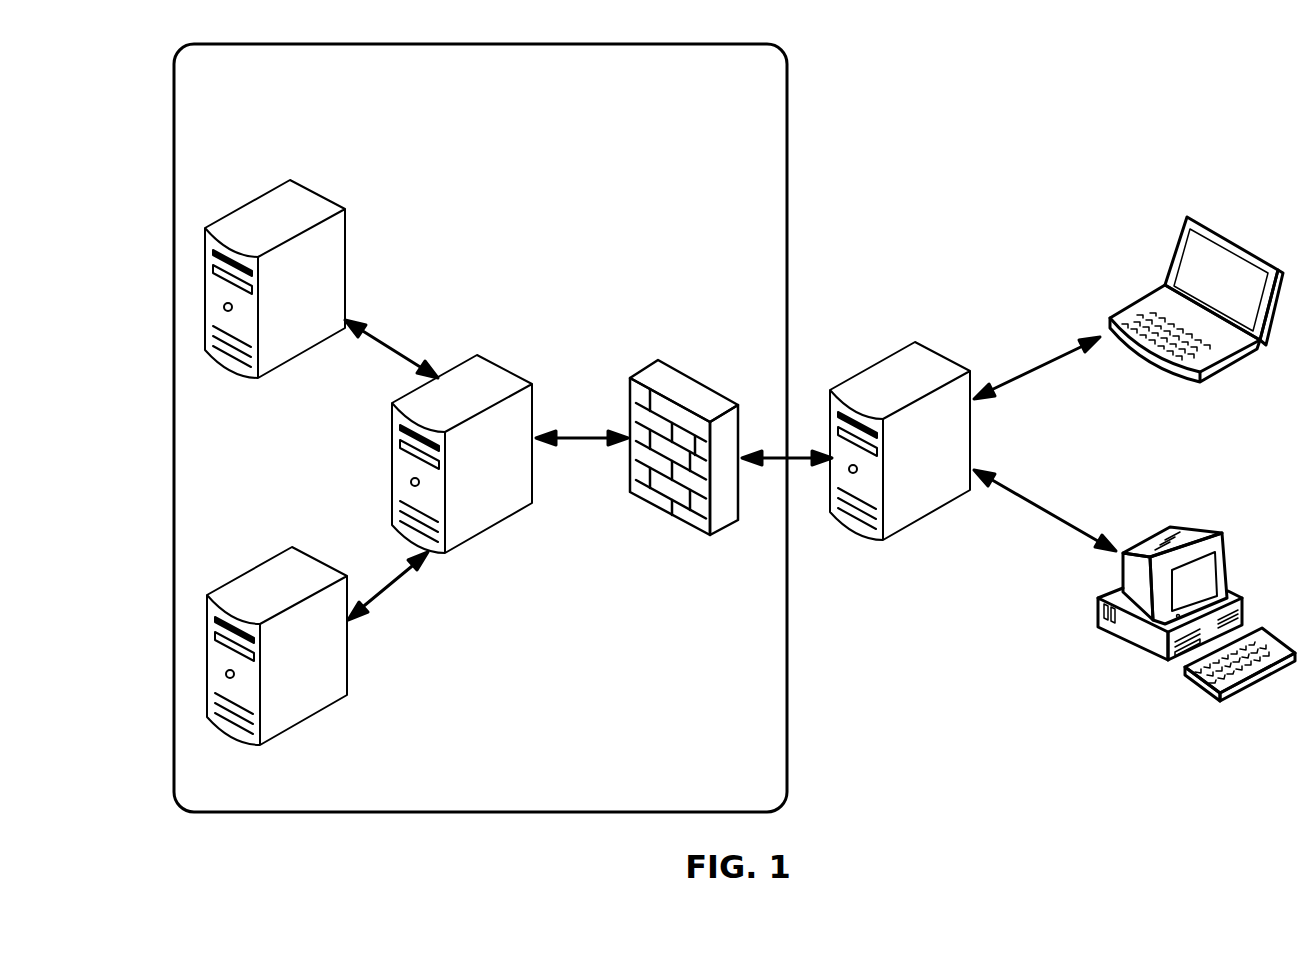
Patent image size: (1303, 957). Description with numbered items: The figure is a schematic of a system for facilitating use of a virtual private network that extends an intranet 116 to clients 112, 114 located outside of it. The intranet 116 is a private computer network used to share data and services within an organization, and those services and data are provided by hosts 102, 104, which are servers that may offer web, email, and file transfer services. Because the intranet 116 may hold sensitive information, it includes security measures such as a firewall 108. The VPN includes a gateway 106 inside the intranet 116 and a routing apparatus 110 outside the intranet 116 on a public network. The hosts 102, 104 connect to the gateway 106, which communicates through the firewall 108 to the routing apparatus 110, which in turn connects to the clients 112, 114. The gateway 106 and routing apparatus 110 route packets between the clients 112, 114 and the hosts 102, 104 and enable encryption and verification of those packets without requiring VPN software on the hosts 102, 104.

The host 102 is at (275, 301).
The host 104 is at (277, 669).
The gateway 106 is at (470, 474).
The firewall 108 is at (677, 466).
The routing apparatus 110 is at (912, 481).
The client 112 is at (1196, 326).
The client 114 is at (1196, 642).
The intranet 116 is at (541, 81).